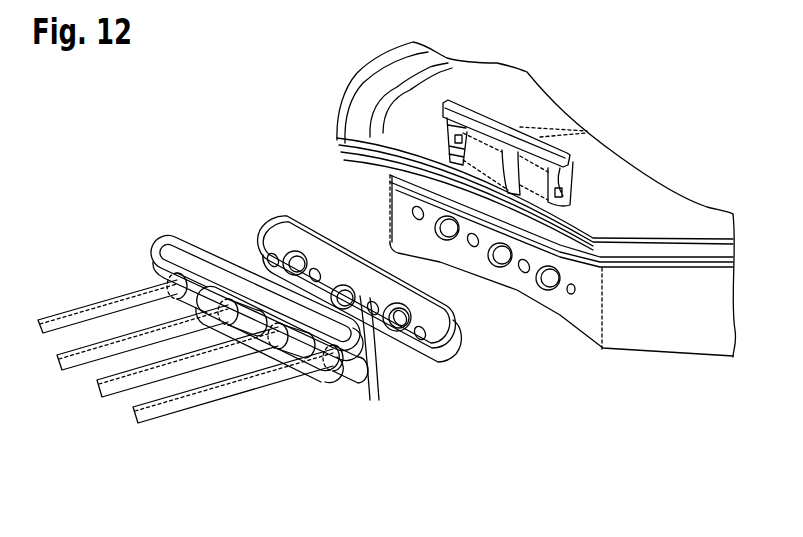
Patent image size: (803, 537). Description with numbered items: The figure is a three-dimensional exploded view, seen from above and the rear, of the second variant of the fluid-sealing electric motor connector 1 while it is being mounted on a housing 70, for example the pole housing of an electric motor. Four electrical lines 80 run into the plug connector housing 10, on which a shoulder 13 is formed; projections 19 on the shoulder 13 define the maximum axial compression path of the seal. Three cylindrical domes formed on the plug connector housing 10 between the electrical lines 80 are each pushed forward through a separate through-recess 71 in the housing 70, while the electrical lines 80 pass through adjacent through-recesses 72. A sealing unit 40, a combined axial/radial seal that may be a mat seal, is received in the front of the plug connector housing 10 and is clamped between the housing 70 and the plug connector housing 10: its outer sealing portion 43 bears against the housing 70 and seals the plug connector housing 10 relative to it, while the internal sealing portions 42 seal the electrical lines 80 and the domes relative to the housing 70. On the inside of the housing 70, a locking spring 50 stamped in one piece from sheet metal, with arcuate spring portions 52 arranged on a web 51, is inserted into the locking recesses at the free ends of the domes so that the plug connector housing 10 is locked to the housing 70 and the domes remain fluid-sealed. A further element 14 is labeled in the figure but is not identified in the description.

The fluid-sealing electric motor connector 1 is at (330, 412).
The plug connector housing 10 is at (330, 380).
The shoulder 13 is at (380, 338).
The contact element 14 is at (168, 268).
The projections 19 is at (233, 252).
The sealing unit 40 is at (441, 357).
The internal sealing portion 42 is at (372, 400).
The outer sealing portion 43 is at (283, 217).
The locking spring 50 is at (498, 113).
The web 51 is at (541, 150).
The spring portions 52 is at (453, 152).
The housing 70 is at (630, 173).
The through-recess 71 is at (480, 262).
The through-recesses 72 is at (566, 290).
The electrical lines 80 is at (135, 338).